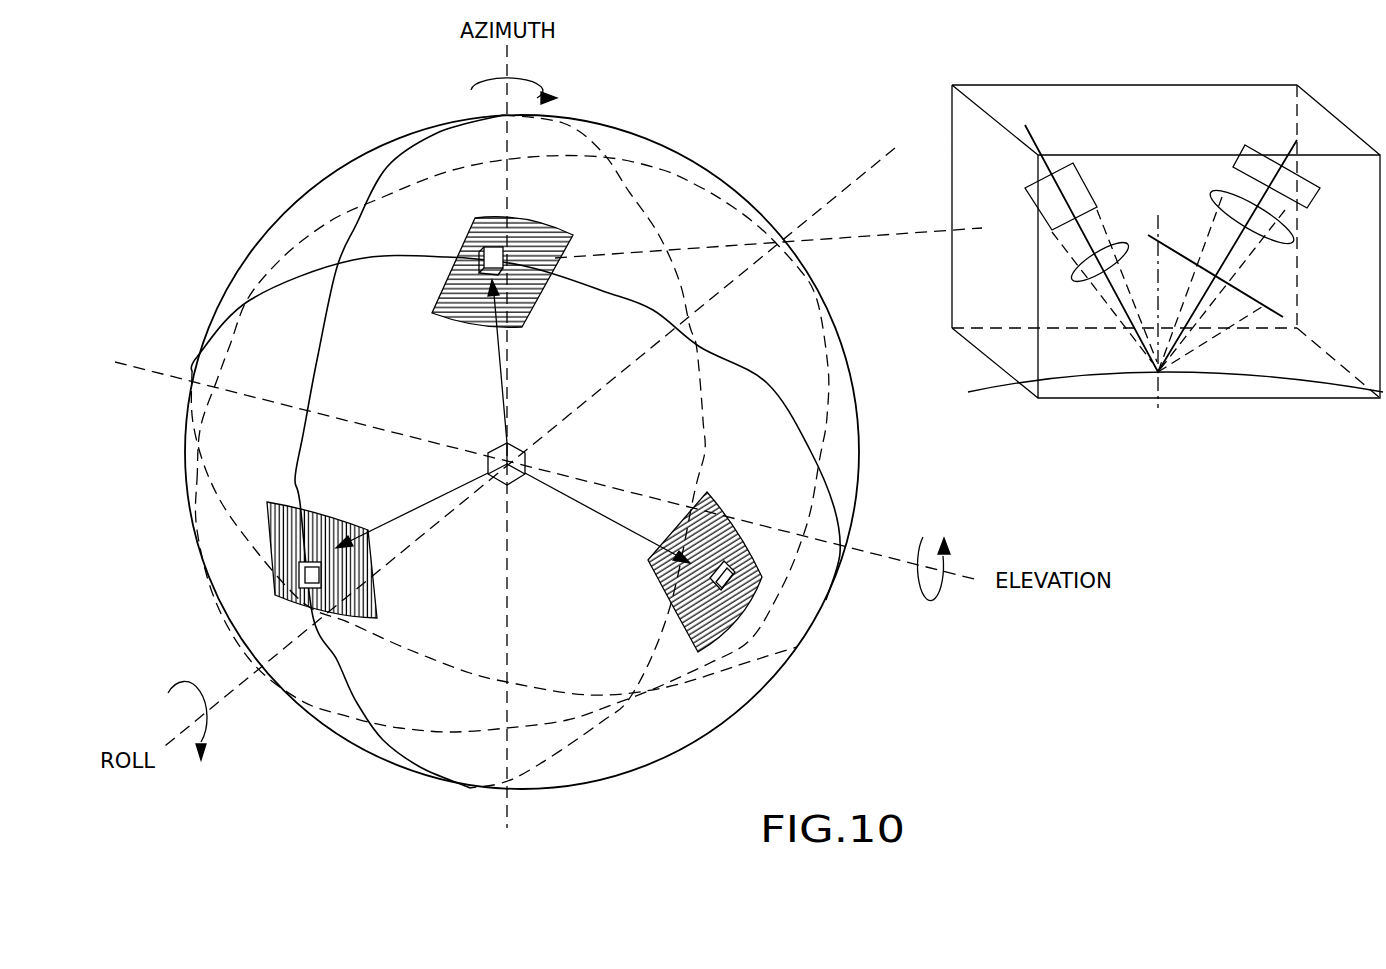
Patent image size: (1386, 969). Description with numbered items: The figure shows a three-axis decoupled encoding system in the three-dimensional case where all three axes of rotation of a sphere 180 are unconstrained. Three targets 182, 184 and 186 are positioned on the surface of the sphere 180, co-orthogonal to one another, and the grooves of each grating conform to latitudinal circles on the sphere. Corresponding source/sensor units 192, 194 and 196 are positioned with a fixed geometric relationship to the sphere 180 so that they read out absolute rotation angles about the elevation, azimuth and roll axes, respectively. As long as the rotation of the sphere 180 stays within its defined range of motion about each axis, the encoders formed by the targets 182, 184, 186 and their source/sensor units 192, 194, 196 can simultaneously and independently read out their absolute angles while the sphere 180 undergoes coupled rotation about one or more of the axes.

The sphere 180 is at (287, 188).
The target 182 is at (787, 592).
The target 184 is at (485, 210).
The target 186 is at (252, 572).
The source/sensor unit 192 is at (760, 566).
The source/sensor unit 194 is at (522, 228).
The source/sensor unit 196 is at (275, 587).